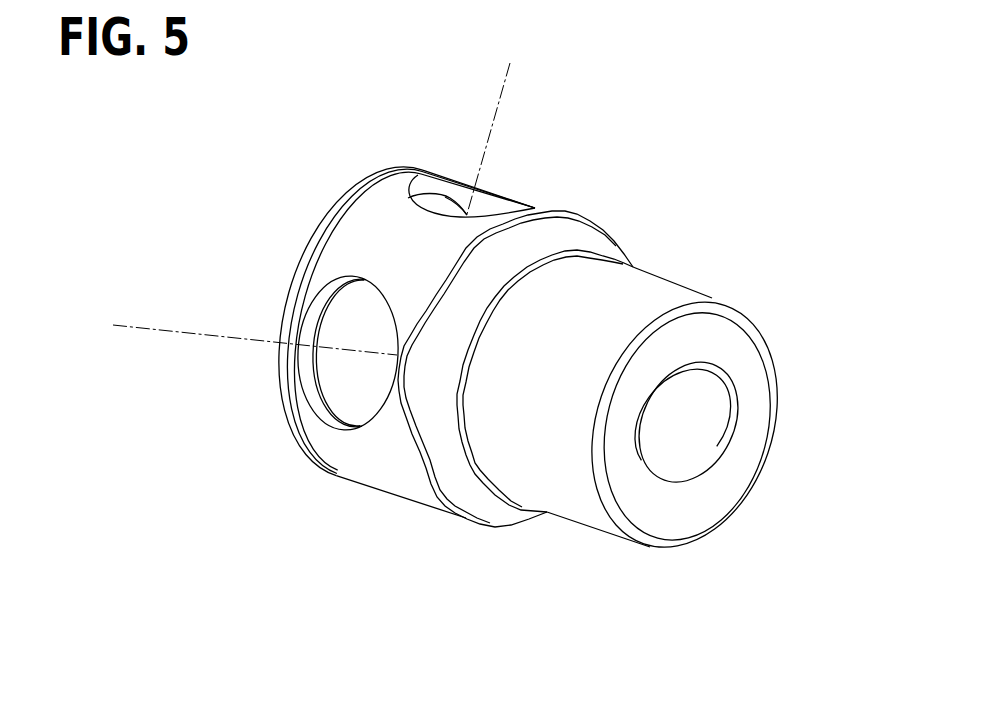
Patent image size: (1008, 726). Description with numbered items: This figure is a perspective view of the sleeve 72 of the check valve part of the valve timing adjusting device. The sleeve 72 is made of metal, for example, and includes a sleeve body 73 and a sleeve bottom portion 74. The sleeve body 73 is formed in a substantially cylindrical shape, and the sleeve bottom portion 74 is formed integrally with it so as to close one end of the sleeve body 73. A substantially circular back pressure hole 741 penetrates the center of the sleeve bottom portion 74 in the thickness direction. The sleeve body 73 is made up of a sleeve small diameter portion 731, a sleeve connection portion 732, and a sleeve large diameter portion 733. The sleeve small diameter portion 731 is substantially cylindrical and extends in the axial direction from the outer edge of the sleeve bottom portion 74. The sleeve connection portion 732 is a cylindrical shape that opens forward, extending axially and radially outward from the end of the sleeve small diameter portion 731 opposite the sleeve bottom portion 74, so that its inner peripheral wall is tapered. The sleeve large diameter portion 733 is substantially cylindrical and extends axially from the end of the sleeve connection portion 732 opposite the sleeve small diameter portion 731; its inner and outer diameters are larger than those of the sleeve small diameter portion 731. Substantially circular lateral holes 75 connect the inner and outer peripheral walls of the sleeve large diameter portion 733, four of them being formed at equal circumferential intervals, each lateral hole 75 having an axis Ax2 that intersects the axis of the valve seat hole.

The sleeve 72 is at (385, 197).
The sleeve body 73 is at (580, 272).
The sleeve small diameter portion 731 is at (551, 488).
The sleeve connection portion 732 is at (467, 493).
The sleeve large diameter portion 733 is at (347, 467).
The sleeve bottom portion 74 is at (723, 345).
The back pressure hole 741 is at (693, 428).
The lateral hole 75 is at (462, 210).
The axis of the lateral hole Ax2 is at (137, 325).